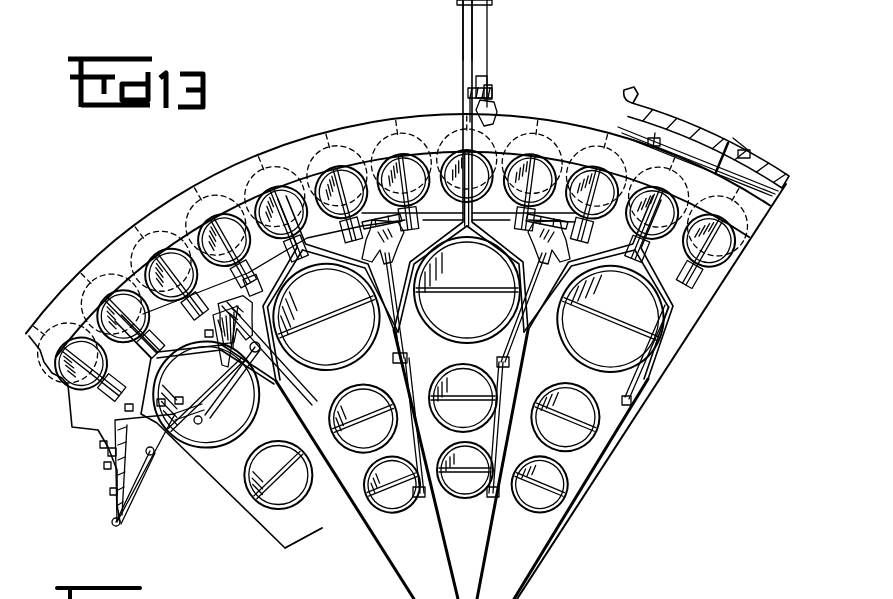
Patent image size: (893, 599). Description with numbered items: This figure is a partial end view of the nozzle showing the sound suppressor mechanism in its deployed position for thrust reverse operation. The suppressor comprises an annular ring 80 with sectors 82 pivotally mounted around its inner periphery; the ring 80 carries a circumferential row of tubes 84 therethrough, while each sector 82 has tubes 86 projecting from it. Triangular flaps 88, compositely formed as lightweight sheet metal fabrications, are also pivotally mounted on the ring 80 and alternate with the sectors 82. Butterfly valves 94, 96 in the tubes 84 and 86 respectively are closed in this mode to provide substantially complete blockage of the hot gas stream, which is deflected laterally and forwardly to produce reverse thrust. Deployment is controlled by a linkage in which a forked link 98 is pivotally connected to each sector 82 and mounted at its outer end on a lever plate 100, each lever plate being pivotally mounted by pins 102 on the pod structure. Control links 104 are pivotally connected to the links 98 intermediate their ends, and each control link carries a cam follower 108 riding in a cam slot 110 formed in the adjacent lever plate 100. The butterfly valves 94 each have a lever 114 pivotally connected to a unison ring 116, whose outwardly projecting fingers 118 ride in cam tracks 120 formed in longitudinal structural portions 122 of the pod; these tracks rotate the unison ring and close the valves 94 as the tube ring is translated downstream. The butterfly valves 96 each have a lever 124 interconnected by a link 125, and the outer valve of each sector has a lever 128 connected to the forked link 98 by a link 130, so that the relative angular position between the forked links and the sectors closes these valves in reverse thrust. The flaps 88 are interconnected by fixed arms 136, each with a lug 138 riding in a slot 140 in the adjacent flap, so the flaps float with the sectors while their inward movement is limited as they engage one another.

The annular ring 80 is at (748, 221).
The sector 82 is at (470, 565).
The tube 84 is at (690, 283).
The tube 86 is at (567, 480).
The triangular flap 88 is at (206, 335).
The butterfly valve 94 is at (718, 253).
The butterfly valve 96 is at (287, 492).
The forked link 98 is at (462, 73).
The lever plate 100 is at (483, 43).
The pin 102 is at (474, 117).
The control link 104 is at (474, 92).
The cam follower 108 is at (490, 93).
The cam slot 110 is at (487, 78).
The lever 114 is at (652, 162).
The unison ring 116 is at (668, 116).
The finger 118 is at (752, 138).
The cam track 120 is at (748, 152).
The structural portion 122 is at (782, 188).
The lever 124 is at (388, 503).
The link 125 is at (440, 497).
The lever 128 is at (287, 344).
The link 130 is at (290, 318).
The fixed arm 136 is at (208, 392).
The lug 138 is at (200, 423).
The slot 140 is at (217, 397).